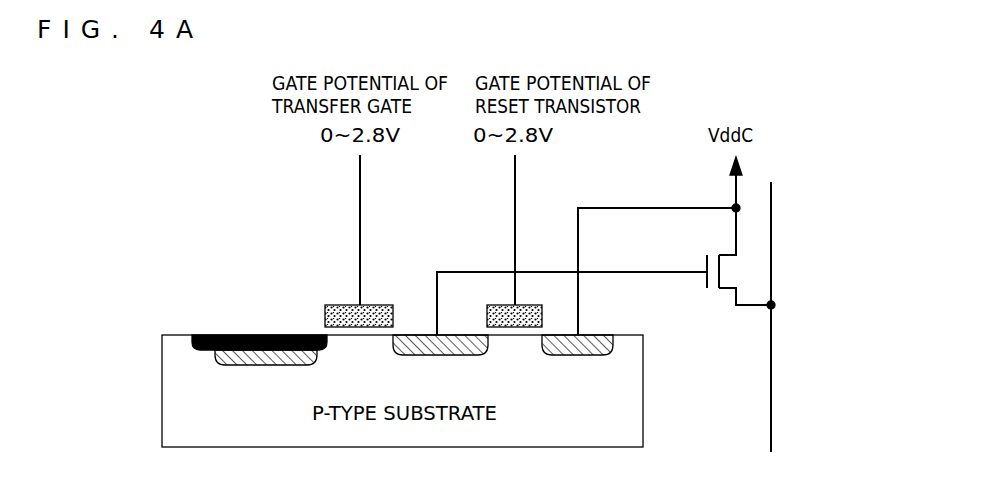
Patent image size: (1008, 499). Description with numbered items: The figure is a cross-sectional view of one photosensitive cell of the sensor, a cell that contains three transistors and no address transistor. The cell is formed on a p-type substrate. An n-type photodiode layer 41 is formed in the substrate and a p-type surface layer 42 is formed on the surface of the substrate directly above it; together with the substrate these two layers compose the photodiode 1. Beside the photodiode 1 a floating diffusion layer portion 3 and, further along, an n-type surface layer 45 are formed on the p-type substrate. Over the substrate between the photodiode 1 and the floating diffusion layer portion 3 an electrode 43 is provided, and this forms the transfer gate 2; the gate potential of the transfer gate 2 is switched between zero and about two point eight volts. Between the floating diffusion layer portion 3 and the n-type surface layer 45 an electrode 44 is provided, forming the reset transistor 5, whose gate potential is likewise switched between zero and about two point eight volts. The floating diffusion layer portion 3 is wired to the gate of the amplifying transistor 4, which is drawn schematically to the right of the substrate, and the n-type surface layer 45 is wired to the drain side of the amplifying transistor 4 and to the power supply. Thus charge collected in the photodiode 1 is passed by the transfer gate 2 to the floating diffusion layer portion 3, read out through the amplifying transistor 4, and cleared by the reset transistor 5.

The photodiode 1 is at (250, 302).
The transfer gate 2 is at (410, 237).
The floating diffusion layer portion 3 is at (413, 333).
The amplifying transistor 4 is at (714, 292).
The reset transistor 5 is at (568, 237).
The n-type photodiode layer 41 is at (215, 358).
The p-type surface layer 42 is at (220, 335).
The electrode 43 is at (325, 313).
The electrode 44 is at (487, 315).
The n-type surface layer 45 is at (602, 334).